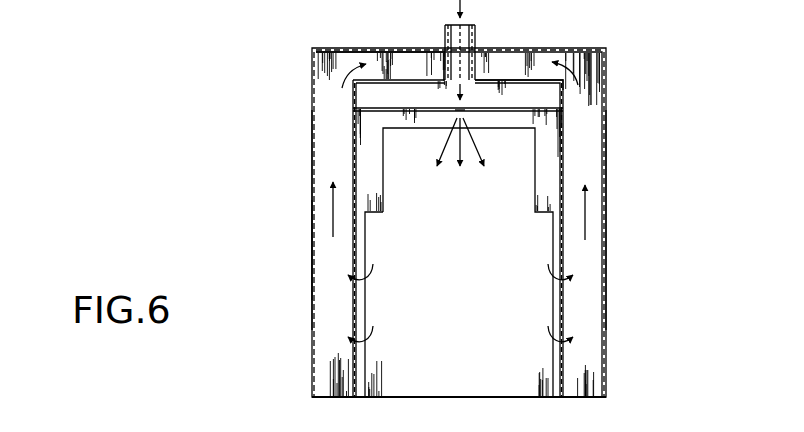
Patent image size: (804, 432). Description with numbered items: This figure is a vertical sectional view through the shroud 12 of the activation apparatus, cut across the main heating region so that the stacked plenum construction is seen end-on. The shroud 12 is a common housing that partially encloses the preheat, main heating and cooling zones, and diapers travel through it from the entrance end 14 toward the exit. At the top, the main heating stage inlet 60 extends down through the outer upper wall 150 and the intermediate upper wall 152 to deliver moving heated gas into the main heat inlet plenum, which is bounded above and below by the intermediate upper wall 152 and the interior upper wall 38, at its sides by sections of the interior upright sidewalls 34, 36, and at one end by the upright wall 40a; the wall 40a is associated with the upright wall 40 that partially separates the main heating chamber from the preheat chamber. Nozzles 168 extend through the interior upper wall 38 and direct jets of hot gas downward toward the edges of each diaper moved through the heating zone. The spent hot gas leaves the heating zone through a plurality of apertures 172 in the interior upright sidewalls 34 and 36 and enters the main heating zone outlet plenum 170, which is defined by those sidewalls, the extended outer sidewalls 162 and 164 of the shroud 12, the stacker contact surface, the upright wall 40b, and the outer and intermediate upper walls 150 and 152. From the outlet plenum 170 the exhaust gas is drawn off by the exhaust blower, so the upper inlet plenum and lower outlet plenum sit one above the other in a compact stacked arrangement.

The shroud 12 is at (250, 143).
The entrance end 14 is at (548, 250).
The interior upright sidewall 34 is at (357, 315).
The interior upright sidewall 36 is at (562, 378).
The interior upper wall 38 is at (505, 110).
The upright wall 40 is at (365, 177).
The upright wall 40a is at (372, 101).
The upright wall 40b is at (338, 62).
The main heating stage inlet 60 is at (465, 44).
The outer upper wall 150 is at (575, 48).
The intermediate upper wall 152 is at (488, 80).
The outer sidewall 162 is at (313, 263).
The outer sidewall 164 is at (607, 270).
The nozzles 168 is at (458, 110).
The main heating zone outlet plenum 170 is at (316, 211).
The apertures 172 is at (356, 292).